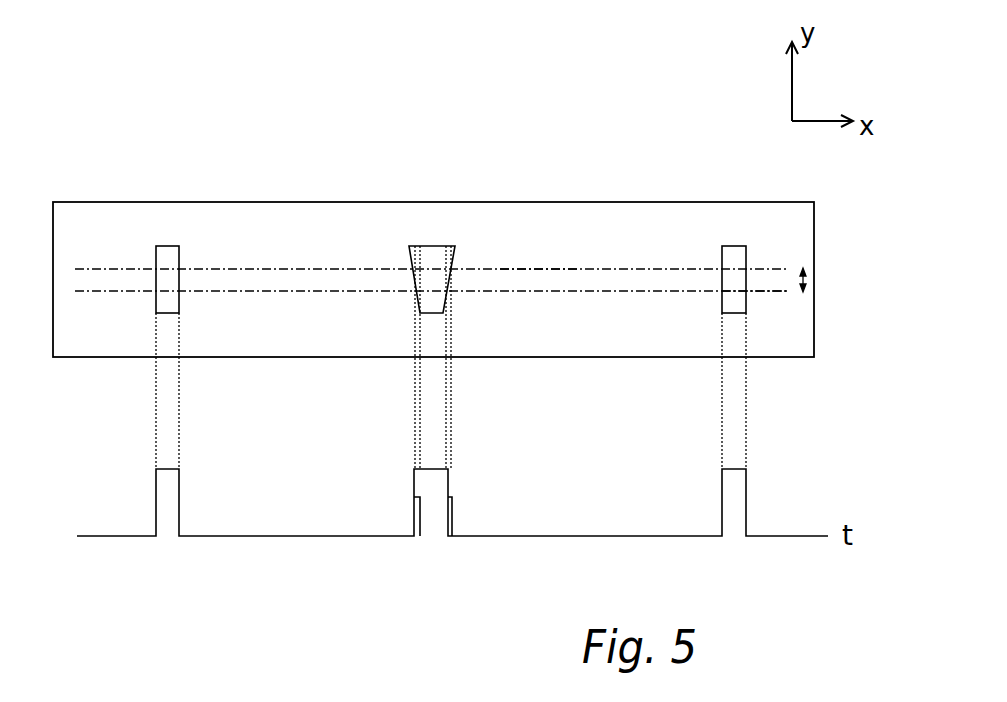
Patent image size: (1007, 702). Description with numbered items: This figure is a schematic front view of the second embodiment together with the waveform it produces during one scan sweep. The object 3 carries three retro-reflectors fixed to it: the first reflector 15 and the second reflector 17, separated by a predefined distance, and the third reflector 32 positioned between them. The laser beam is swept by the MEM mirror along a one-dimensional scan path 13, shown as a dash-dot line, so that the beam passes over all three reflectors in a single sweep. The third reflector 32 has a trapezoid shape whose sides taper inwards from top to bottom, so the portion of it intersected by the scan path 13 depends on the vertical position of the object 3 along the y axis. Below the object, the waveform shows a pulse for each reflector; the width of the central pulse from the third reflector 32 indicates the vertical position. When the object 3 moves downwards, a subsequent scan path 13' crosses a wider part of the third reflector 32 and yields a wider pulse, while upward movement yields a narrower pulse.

The object 3 is at (316, 224).
The scan path 13 is at (644, 276).
The exposure track 13' is at (503, 163).
The first reflector 15 is at (158, 250).
The second reflector 17 is at (740, 298).
The third reflector 32 is at (448, 252).